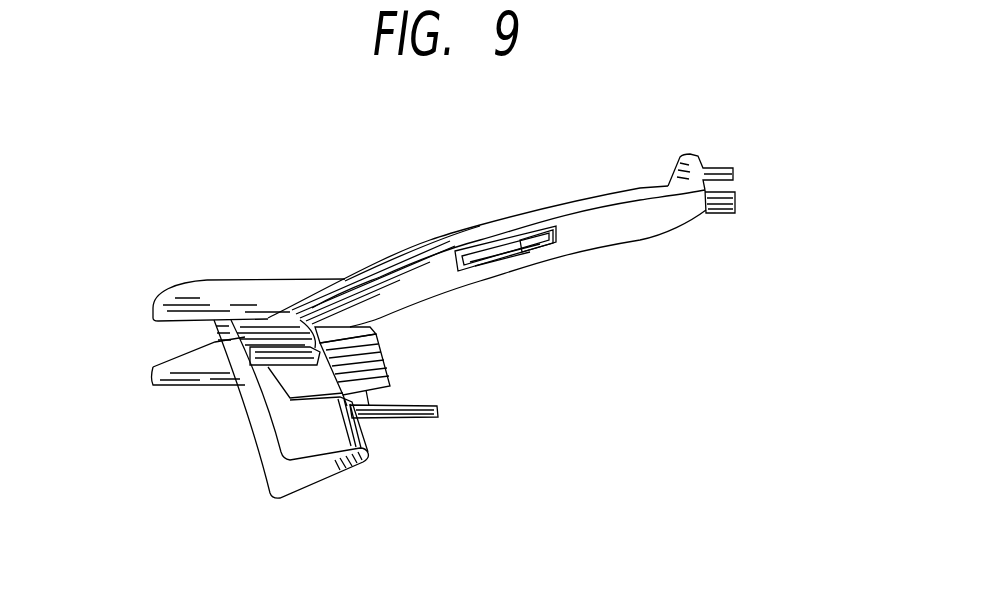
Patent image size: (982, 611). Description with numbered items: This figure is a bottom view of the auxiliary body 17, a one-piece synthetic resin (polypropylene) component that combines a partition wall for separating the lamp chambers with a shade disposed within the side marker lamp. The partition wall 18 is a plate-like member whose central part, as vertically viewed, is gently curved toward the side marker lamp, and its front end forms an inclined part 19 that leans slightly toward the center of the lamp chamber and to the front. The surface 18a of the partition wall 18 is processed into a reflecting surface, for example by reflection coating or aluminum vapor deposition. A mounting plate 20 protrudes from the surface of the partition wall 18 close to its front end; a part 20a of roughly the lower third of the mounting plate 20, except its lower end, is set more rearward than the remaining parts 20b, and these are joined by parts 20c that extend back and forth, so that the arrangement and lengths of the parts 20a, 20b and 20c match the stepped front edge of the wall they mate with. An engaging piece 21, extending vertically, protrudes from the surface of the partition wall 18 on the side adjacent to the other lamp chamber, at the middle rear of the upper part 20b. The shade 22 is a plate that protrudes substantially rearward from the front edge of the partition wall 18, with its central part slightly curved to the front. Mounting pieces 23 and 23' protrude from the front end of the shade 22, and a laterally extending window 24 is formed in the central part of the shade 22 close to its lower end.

The auxiliary body 17 is at (590, 252).
The partition wall 18 is at (347, 477).
The surface of the partition wall 18a is at (291, 498).
The inclined part 19 is at (167, 327).
The mounting plate 20 is at (380, 353).
The part of the lower portion of the mounting plate 20a is at (268, 368).
The remaining parts of the mounting plate 20b is at (373, 420).
The connecting parts 20c is at (335, 381).
The engaging piece 21 is at (440, 408).
The shade 22 is at (580, 198).
The mounting piece 23 is at (765, 214).
The mounting piece 23' is at (738, 153).
The window 24 is at (523, 243).